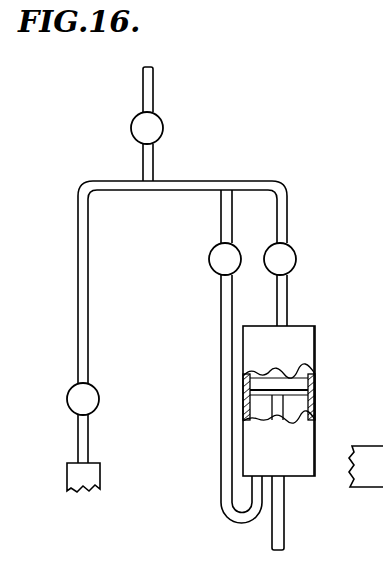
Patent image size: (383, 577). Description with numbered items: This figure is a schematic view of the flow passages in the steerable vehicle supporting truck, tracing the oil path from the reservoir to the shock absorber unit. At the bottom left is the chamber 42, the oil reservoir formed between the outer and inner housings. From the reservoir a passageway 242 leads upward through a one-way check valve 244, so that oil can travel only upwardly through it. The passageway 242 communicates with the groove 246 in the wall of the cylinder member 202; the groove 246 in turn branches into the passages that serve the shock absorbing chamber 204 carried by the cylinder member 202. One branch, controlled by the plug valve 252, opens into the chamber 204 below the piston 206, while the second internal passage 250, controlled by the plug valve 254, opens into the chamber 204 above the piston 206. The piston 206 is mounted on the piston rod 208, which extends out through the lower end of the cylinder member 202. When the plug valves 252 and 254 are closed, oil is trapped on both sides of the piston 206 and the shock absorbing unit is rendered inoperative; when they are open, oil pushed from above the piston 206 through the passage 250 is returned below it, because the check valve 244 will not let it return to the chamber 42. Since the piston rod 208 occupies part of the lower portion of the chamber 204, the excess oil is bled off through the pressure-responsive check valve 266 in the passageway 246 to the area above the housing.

The pressure-responsive check valve 266 is at (163, 125).
The groove 246 is at (224, 180).
The plug valve 252 is at (216, 247).
The plug valve 254 is at (292, 247).
The second internal passage 250 is at (288, 290).
The cylinder member 202 is at (316, 339).
The piston 206 is at (300, 390).
The shock absorbing chamber 204 is at (297, 410).
The passageway 242 is at (78, 328).
The one-way check valve 244 is at (92, 385).
The chamber 42 is at (100, 473).
The piston rod 208 is at (285, 503).